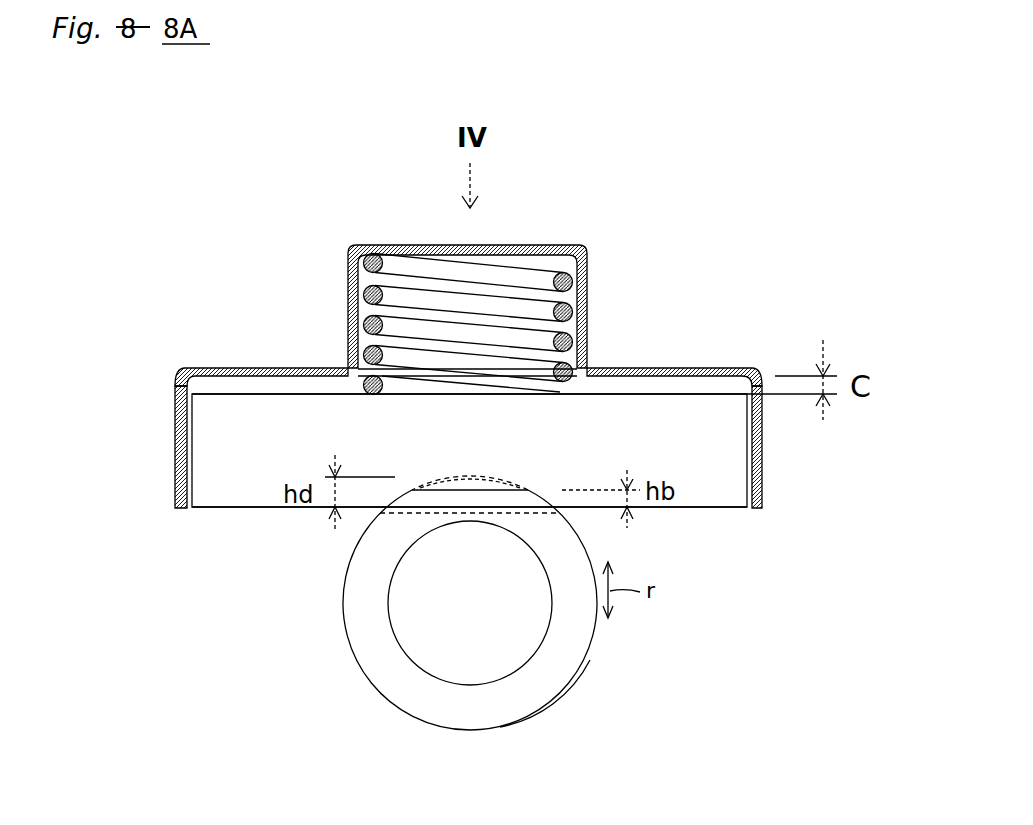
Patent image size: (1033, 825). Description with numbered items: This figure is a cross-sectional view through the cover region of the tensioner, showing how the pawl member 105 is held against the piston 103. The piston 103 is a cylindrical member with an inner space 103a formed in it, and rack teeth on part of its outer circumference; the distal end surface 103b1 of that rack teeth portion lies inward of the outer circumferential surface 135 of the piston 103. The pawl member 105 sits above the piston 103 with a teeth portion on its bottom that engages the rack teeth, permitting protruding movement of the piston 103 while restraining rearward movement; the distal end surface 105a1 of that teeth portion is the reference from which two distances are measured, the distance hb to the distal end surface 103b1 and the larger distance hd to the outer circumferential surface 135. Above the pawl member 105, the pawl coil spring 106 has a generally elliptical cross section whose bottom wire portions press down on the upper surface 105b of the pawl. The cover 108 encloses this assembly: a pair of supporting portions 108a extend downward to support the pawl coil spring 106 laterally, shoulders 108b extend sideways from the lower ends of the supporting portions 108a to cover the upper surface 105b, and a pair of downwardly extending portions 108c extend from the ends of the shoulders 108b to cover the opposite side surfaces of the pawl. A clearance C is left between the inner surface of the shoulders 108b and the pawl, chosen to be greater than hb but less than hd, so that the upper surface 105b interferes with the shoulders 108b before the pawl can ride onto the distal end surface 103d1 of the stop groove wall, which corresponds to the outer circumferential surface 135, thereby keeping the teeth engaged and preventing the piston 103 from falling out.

The piston 103 is at (360, 668).
The inner space 103a is at (489, 680).
The distal end surface of the rack teeth portion 103b1 is at (503, 487).
The distal end surface of the rear side wall surface of the stop groove 103d1 is at (475, 478).
The pawl member 105 is at (243, 440).
The distal end surface of the teeth portion 105a1 is at (745, 509).
The upper surface of the pawl 105b is at (302, 393).
The pawl coil spring 106 is at (543, 247).
The cover 108 is at (469, 341).
The supporting portions 108a is at (347, 303).
The shoulders 108b is at (222, 368).
The downwardly extending portions 108c is at (177, 452).
The outer circumferential surface of the piston 135 is at (574, 681).